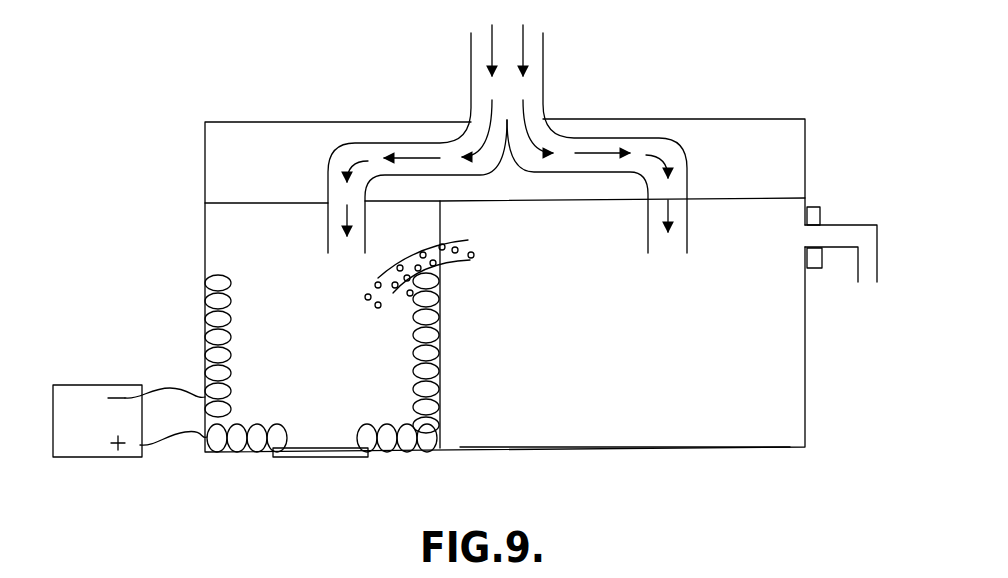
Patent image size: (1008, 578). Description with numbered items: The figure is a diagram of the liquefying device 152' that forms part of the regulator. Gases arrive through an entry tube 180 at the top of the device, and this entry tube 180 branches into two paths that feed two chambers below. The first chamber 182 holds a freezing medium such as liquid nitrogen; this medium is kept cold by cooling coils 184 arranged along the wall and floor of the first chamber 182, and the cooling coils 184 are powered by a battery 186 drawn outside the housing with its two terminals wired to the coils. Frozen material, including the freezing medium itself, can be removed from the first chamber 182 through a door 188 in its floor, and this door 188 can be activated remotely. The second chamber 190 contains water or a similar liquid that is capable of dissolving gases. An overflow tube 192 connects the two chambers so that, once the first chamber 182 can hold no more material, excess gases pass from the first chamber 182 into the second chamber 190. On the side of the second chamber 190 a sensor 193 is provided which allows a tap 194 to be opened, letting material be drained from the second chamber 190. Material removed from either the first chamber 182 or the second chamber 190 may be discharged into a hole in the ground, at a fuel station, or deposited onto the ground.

The liquefying device 152' is at (531, 233).
The entry tube 180 is at (545, 91).
The first chamber 182 is at (260, 257).
The cooling coils 184 is at (203, 357).
The battery 186 is at (83, 427).
The door 188 is at (322, 452).
The second chamber 190 is at (765, 412).
The overflow tube 192 is at (397, 292).
The sensor 193 is at (822, 217).
The tap 194 is at (858, 258).